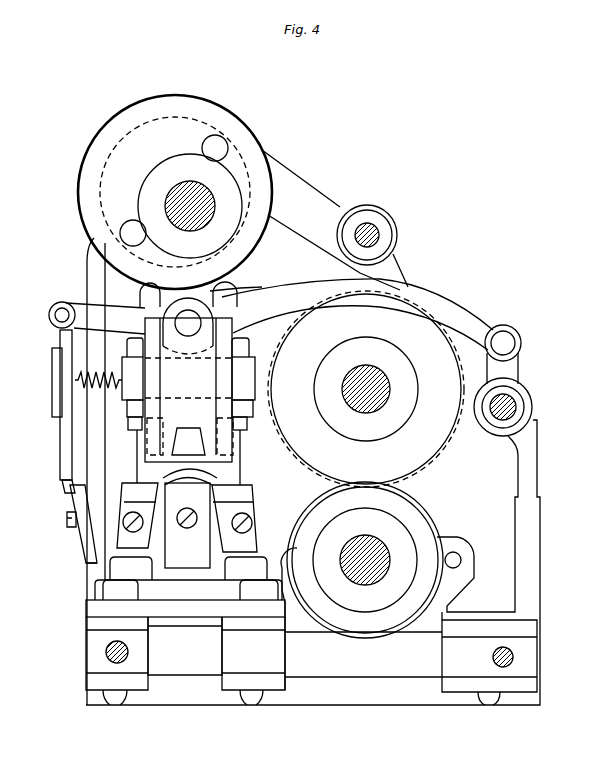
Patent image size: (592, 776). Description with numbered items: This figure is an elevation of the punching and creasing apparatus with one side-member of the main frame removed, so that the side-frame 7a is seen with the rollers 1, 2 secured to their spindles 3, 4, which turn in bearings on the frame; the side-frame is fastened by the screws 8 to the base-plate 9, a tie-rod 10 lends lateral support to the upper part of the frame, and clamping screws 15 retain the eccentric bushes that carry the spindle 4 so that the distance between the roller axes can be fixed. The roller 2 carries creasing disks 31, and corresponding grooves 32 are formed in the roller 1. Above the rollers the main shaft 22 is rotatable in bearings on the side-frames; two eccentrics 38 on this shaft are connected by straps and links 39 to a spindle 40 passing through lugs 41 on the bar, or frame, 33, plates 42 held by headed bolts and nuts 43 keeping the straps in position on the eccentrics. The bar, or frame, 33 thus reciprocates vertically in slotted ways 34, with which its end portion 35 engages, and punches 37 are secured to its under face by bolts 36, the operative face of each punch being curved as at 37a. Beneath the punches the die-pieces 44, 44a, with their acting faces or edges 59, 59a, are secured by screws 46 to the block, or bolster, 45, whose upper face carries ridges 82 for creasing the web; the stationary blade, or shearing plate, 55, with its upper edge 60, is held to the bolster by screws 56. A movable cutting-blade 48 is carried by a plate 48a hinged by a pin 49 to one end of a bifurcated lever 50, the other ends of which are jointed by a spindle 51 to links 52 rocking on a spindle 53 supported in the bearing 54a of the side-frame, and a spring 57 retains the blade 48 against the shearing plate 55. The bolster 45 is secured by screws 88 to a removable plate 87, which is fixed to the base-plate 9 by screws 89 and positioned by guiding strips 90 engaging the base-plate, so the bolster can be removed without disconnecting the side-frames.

The roller 1 is at (366, 389).
The roller 2 is at (365, 560).
The spindle 3 is at (366, 372).
The spindle 4 is at (365, 545).
The side-frame 7a is at (313, 427).
The screws 8 is at (128, 650).
The base-plate 9 is at (311, 654).
The tie-rod 10 is at (380, 235).
The clamping screws 15 is at (460, 558).
The main shaft 22 is at (198, 194).
The creasing disks 31 is at (443, 532).
The grooves 32 is at (290, 437).
The bar, or frame 33 is at (188, 369).
The slotted ways 34 is at (190, 466).
The end portion 35 is at (189, 390).
The bolts 36 is at (128, 437).
The punches 37 is at (190, 408).
The curved face of punch 37a is at (188, 441).
The eccentrics 38 is at (188, 123).
The straps and links 39 is at (236, 291).
The spindle 40 is at (188, 323).
The lugs 41 is at (188, 324).
The plates 42 is at (175, 184).
The headed bolts and nuts 43 is at (174, 190).
The die-pieces 44 is at (260, 540).
The die-pieces 44a is at (188, 525).
The block, or bolster 45 is at (184, 542).
The screws 46 is at (125, 516).
The cutting-blade 48 is at (60, 440).
The plate 48a is at (55, 420).
The pin 49 is at (56, 306).
The bifurcated lever 50 is at (478, 308).
The spindle 51 is at (508, 338).
The links 52 is at (516, 366).
The spindle 53 is at (512, 405).
The bearing 54a is at (482, 424).
The stationary blade, or shearing plate 55 is at (84, 553).
The screws 56 is at (67, 522).
The spring 57 is at (85, 388).
The acting face or edge 59 is at (130, 483).
The acting face or edge 59a is at (178, 489).
The upper edge 60 is at (76, 485).
The ridges 82 is at (188, 477).
The removable plate 87 is at (185, 608).
The screws 88 is at (188, 568).
The screws 89 is at (190, 590).
The guiding strips 90 is at (190, 623).